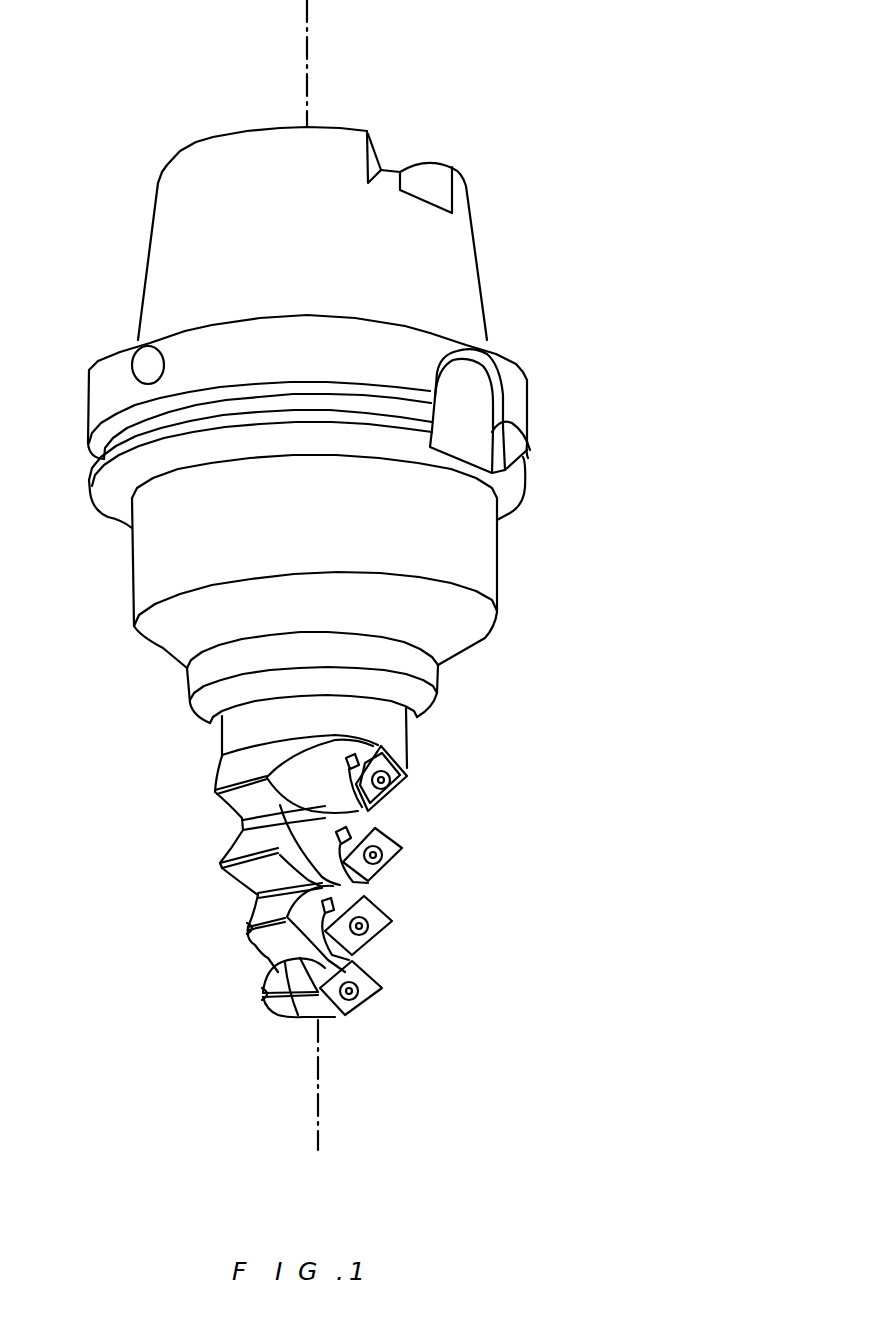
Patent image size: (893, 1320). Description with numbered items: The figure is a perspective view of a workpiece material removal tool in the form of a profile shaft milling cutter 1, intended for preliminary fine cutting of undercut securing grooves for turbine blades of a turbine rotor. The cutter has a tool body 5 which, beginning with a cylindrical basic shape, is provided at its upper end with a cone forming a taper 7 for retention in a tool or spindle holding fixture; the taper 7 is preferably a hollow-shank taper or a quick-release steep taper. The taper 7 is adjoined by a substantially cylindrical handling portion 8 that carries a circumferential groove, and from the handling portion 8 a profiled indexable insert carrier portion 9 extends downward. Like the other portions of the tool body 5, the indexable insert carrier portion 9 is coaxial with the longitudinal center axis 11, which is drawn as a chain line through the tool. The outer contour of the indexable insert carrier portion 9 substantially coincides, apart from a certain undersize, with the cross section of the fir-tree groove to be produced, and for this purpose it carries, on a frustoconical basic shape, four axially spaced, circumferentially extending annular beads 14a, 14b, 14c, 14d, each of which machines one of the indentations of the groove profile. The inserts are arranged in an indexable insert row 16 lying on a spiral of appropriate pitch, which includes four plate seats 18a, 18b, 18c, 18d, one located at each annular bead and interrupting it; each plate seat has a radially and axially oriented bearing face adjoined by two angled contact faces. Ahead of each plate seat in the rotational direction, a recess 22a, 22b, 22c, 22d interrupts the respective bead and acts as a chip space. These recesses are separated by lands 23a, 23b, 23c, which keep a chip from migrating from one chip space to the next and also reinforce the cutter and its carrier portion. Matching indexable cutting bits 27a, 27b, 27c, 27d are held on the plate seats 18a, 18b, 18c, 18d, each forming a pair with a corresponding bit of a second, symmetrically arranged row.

The profile shaft milling cutter 1 is at (354, 575).
The tool body 5 is at (472, 565).
The taper 7 is at (250, 162).
The handling portion 8 is at (510, 400).
The indexable insert carrier portion 9 is at (462, 727).
The longitudinal center axis 11 is at (307, 35).
The annular bead 14a is at (213, 788).
The annular bead 14b is at (220, 863).
The annular bead 14c is at (243, 930).
The annular bead 14d is at (253, 997).
The indexable insert row 16 is at (314, 914).
The plate seat 18a is at (444, 775).
The plate seat 18b is at (440, 841).
The plate seat 18c is at (432, 907).
The plate seat 18d is at (432, 979).
The recess 22a is at (319, 770).
The recess 22b is at (313, 857).
The recess 22c is at (300, 924).
The recess 22d is at (318, 982).
The land 23a is at (243, 823).
The land 23b is at (256, 900).
The land 23c is at (293, 1013).
The indexable cutting bit 27a is at (390, 794).
The indexable cutting bit 27b is at (392, 862).
The indexable cutting bit 27c is at (390, 926).
The indexable cutting bit 27d is at (367, 995).